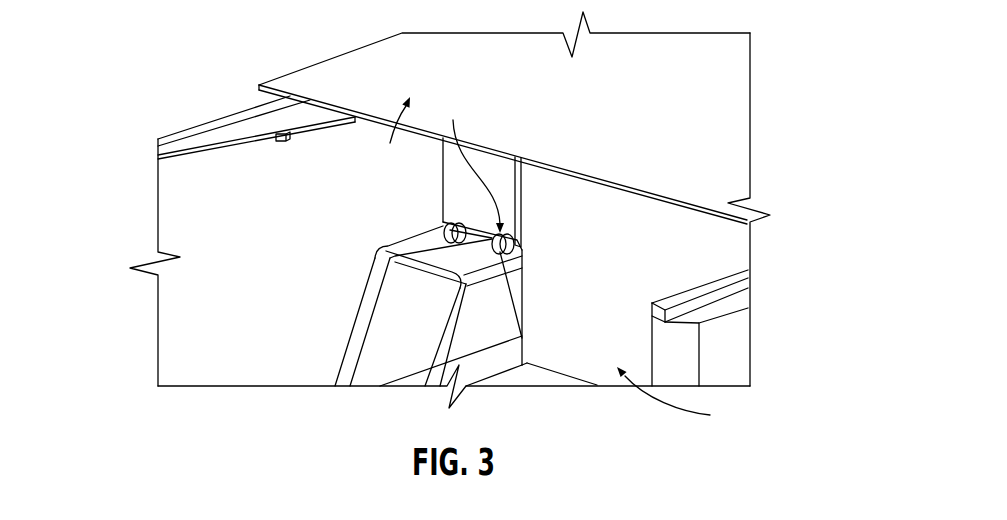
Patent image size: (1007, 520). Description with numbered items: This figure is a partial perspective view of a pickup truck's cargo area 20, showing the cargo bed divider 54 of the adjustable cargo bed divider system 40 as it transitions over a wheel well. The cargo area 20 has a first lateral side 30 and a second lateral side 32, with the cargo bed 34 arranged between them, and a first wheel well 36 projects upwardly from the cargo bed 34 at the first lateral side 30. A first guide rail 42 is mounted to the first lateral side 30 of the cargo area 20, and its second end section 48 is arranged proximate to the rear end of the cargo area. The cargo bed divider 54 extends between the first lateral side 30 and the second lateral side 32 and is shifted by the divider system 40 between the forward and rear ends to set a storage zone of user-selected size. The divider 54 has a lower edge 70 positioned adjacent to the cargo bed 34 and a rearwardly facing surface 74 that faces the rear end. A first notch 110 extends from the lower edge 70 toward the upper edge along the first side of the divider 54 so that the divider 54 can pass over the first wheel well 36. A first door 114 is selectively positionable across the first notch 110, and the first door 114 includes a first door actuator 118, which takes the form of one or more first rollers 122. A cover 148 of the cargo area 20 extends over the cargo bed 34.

The cargo area 20 is at (193, 174).
The first lateral side 30 is at (218, 230).
The second lateral side 32 is at (700, 323).
The cargo bed 34 is at (540, 378).
The first wheel well 36 is at (372, 353).
The adjustable cargo bed divider system 40 is at (482, 306).
The first guide rail 42 is at (393, 138).
The second end section 48 is at (278, 142).
The cargo bed divider 54 is at (679, 402).
The lower edge 70 is at (530, 365).
The rearwardly facing surface 74 is at (617, 288).
The first notch 110 is at (458, 316).
The first door 114 is at (497, 173).
The first door actuator 118 is at (468, 160).
The first rollers 122 is at (447, 227).
The cover 148 is at (717, 100).